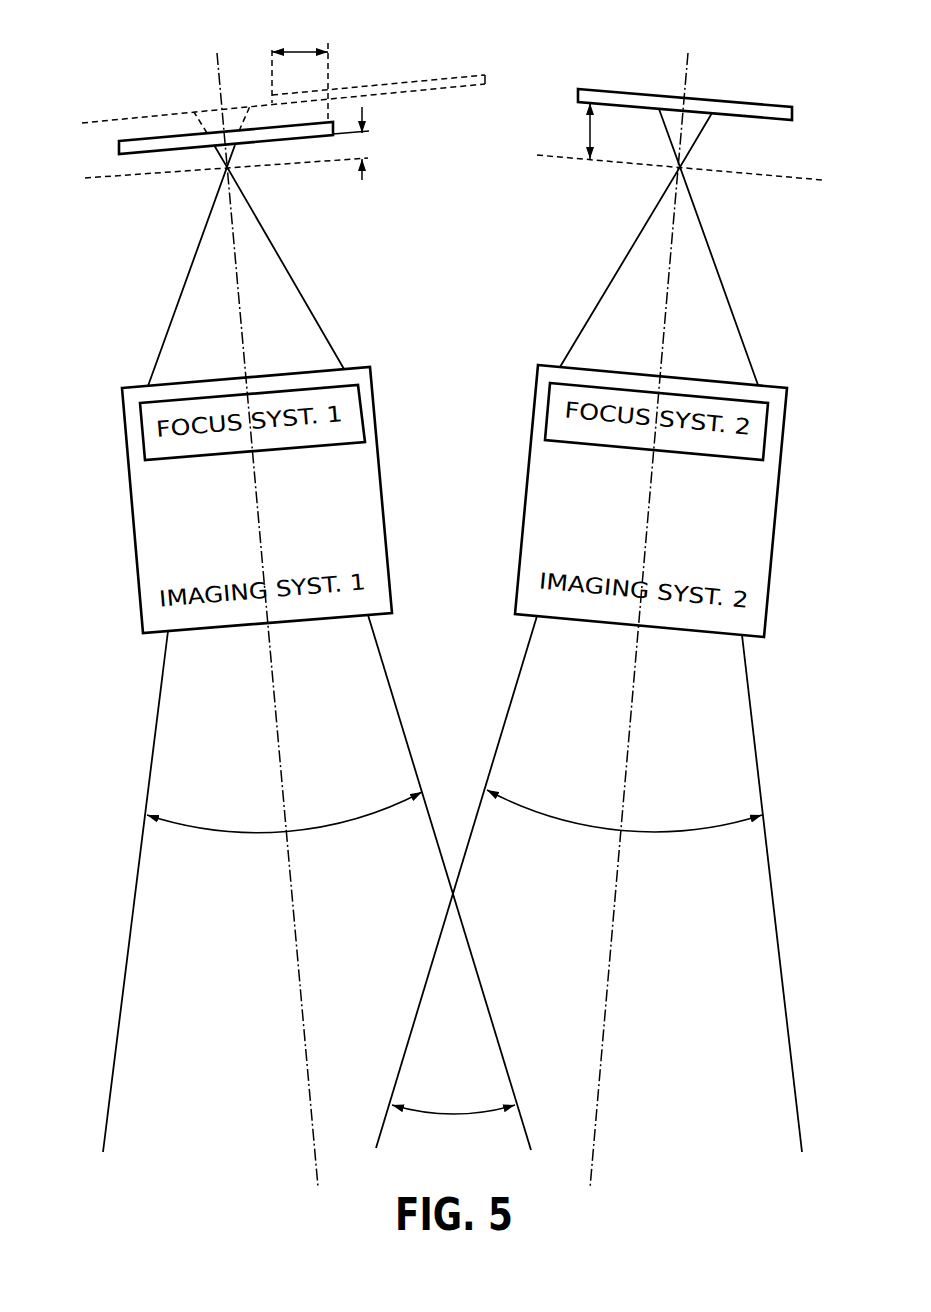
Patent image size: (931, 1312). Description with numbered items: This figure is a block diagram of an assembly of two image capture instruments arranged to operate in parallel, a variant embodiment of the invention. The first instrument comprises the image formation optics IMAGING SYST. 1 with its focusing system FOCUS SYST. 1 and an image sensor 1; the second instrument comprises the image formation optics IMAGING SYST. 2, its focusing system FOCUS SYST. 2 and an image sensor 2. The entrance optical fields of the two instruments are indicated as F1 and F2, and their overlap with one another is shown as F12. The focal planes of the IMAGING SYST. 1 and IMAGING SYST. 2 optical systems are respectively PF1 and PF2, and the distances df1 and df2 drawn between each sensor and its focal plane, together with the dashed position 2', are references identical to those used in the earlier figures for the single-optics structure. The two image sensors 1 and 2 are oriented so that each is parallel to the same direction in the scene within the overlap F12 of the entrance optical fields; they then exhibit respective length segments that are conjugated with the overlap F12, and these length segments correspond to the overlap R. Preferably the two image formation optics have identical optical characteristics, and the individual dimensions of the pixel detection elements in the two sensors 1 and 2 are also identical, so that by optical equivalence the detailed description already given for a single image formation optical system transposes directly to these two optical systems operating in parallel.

The image sensor 1 is at (131, 153).
The image sensor 2 is at (685, 87).
The image sensor 2' is at (283, 75).
The focal plane PF1 is at (95, 180).
The focal plane PF2 is at (793, 181).
The overlap R is at (300, 70).
The defocus distance df1 is at (366, 143).
The defocus distance df2 is at (569, 131).
The entrance optical field F1 is at (284, 826).
The entrance optical field F2 is at (624, 825).
The overlap of the entrance optical fields F12 is at (453, 1126).